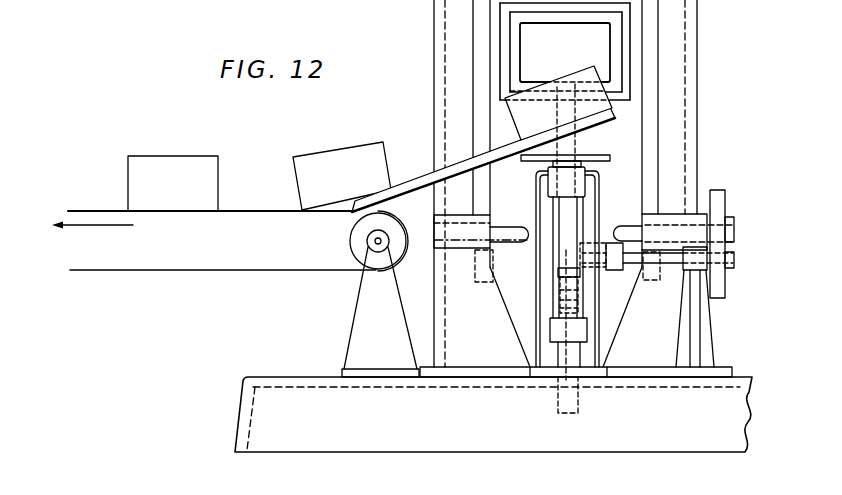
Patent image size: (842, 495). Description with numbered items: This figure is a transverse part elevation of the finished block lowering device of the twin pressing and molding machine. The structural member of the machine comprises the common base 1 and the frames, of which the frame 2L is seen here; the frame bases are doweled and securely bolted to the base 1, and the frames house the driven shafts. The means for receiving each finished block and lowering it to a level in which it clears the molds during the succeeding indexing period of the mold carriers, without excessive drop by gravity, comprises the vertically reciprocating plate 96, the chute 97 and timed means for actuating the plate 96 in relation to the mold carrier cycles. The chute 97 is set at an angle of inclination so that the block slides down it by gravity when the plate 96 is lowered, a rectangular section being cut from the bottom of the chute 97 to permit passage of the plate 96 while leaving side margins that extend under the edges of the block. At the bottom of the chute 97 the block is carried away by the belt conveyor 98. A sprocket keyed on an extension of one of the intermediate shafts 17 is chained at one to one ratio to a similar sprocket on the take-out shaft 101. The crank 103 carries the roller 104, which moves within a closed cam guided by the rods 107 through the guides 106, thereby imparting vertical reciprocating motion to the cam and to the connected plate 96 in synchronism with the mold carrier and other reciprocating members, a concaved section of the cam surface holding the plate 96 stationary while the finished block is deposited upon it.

The common base 1 is at (248, 405).
The frame 2L is at (683, 31).
The intermediate shaft 17 is at (735, 234).
The vertically reciprocating plate 96 is at (589, 157).
The chute 97 is at (462, 173).
The belt conveyor 98 is at (305, 213).
The take-out shaft 101 is at (734, 261).
The crank 103 is at (606, 271).
The roller 104 is at (553, 289).
The guide 106 is at (582, 191).
The rod 107 is at (568, 353).